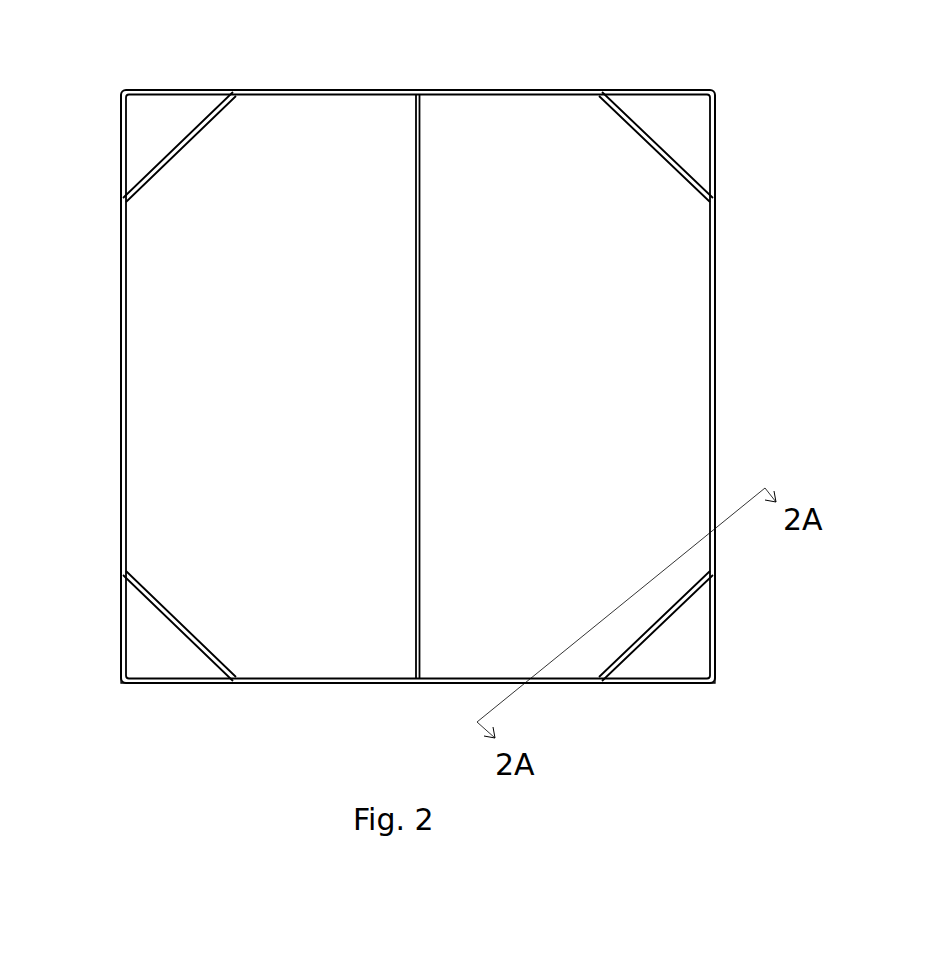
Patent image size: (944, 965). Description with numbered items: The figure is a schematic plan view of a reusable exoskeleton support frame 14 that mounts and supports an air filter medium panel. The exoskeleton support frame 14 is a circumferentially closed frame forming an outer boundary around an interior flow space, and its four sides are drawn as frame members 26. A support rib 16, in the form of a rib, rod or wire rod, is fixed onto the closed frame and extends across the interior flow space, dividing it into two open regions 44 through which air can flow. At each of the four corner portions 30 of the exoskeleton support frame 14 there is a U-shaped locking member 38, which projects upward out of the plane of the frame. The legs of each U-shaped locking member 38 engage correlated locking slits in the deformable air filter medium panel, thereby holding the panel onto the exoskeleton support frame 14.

The exoskeleton support frame 14 is at (803, 412).
The support rib 16 is at (422, 378).
The frame member 26 is at (362, 90).
The corner portion 30 is at (120, 684).
The U-shaped locking member 38 is at (180, 140).
The panel 44 is at (268, 453).